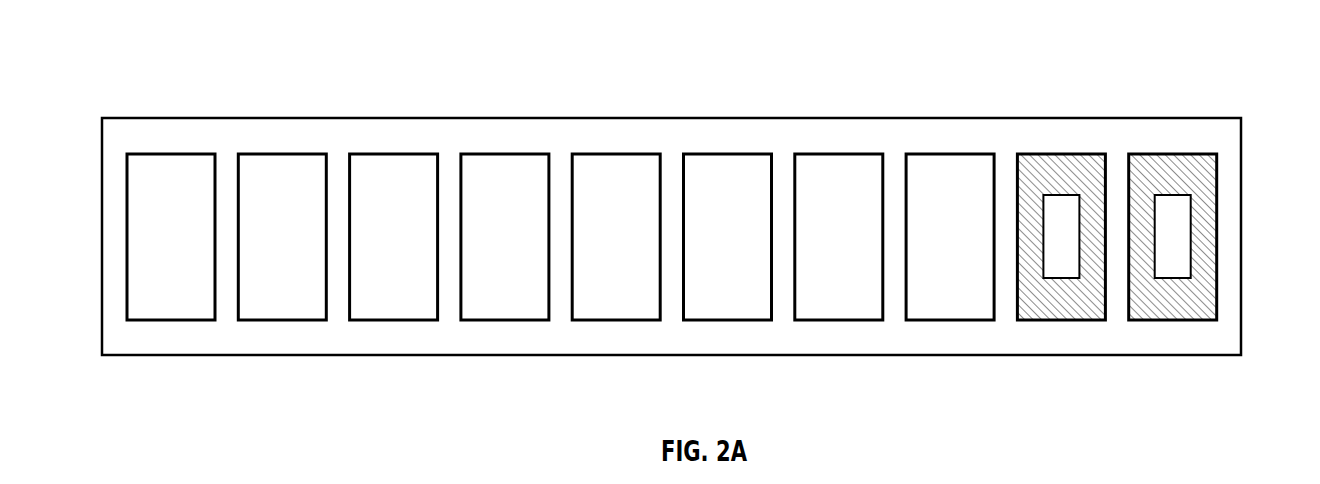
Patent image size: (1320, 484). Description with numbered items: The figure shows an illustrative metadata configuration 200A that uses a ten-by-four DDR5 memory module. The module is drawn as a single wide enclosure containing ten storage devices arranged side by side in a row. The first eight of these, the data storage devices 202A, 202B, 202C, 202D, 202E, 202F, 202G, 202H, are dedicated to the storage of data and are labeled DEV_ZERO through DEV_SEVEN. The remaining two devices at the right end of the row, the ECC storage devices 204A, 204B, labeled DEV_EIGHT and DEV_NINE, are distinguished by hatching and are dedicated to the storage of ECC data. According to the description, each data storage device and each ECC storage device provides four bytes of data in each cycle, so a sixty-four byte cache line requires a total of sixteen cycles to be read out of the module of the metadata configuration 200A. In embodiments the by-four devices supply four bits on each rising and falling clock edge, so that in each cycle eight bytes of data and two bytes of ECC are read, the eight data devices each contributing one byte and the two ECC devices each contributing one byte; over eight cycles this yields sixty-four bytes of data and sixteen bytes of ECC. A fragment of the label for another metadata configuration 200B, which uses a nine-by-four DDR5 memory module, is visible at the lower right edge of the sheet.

The metadata configuration 200A is at (1215, 56).
The data storage device 202A is at (169, 153).
The data storage device 202B is at (280, 153).
The data storage device 202C is at (392, 153).
The data storage device 202D is at (503, 153).
The data storage device 202E is at (614, 153).
The data storage device 202F is at (726, 153).
The data storage device 202G is at (837, 153).
The data storage device 202H is at (948, 153).
The ECC storage device 204A is at (1059, 153).
The ECC storage device 204B is at (1171, 153).
The metadata configuration 200B is at (1212, 483).